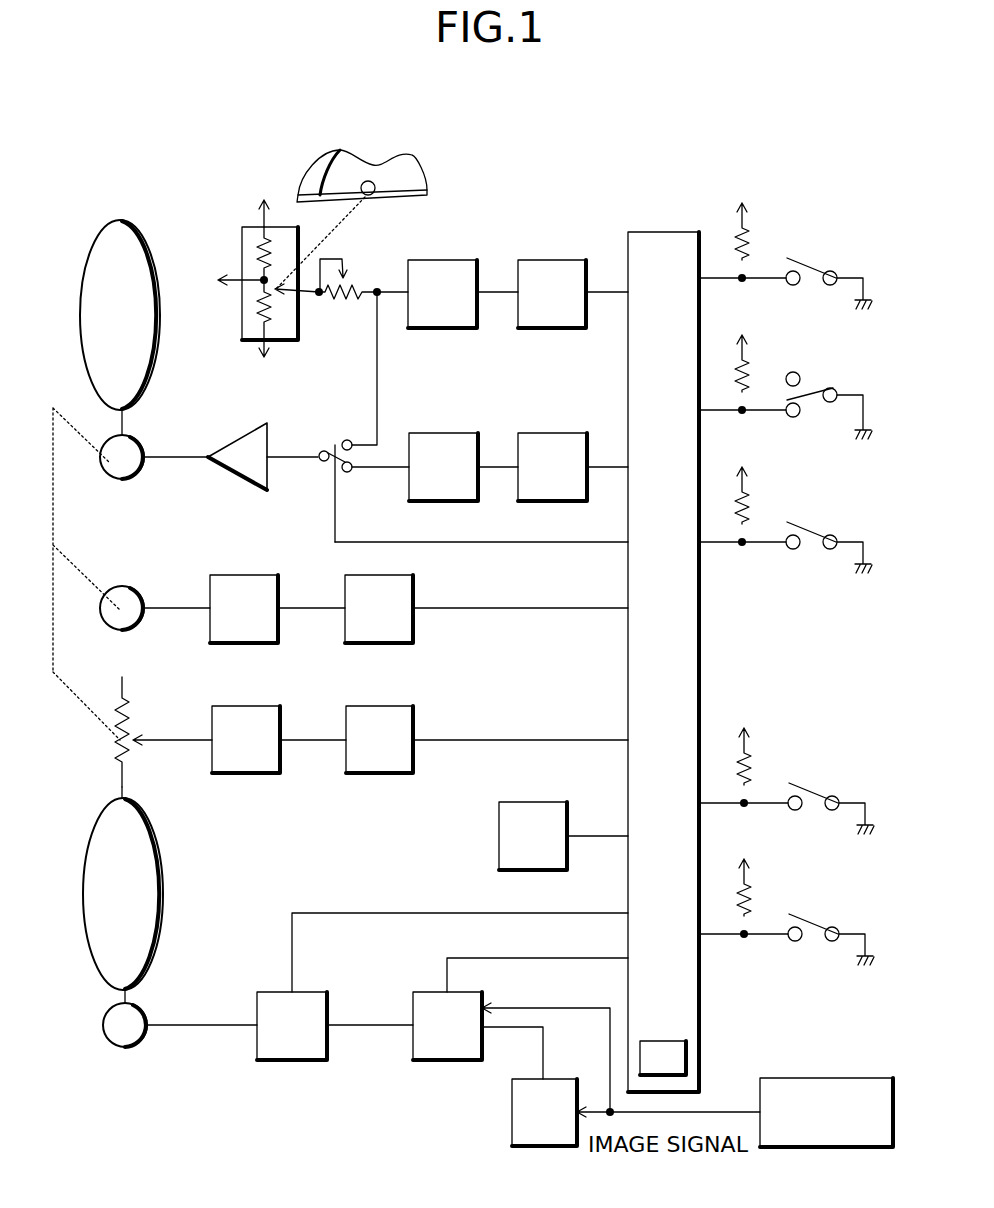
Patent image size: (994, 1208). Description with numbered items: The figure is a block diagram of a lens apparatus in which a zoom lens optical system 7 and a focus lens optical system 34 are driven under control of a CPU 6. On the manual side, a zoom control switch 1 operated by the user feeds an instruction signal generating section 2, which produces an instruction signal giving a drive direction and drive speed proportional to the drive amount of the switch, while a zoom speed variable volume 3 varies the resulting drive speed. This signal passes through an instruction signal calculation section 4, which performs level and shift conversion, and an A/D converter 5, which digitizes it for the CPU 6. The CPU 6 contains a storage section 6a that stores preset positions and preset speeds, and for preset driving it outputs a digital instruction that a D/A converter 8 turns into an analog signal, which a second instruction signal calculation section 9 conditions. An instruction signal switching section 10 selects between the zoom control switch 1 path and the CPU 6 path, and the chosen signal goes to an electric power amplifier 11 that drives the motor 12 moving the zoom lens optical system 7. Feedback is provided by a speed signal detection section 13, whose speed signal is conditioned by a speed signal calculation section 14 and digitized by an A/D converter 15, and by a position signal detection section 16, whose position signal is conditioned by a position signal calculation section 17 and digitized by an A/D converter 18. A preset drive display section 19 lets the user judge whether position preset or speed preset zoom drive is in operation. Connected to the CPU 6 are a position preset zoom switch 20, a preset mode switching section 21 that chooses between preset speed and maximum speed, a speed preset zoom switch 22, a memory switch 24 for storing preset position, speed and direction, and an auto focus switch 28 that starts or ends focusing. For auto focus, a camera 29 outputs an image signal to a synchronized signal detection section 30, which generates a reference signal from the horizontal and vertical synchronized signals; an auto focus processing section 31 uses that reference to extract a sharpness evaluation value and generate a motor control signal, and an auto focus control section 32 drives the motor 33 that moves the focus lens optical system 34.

The zoom control switch 1 is at (408, 153).
The instruction signal generating section 2 is at (242, 237).
The zoom speed variable volume 3 is at (343, 308).
The instruction signal calculation section 4 is at (442, 262).
The A/D converter 5 is at (545, 262).
The CPU 6 is at (662, 235).
The storage section 6a is at (686, 1058).
The zoom lens optical system 7 is at (123, 220).
The D/A converter 8 is at (549, 433).
The instruction signal calculation section 9 is at (435, 433).
The instruction signal switching section 10 is at (328, 463).
The electric power amplifier 11 is at (222, 470).
The motor 12 is at (135, 440).
The speed signal detection section 13 is at (126, 588).
The speed signal calculation section 14 is at (236, 640).
The A/D converter 15 is at (372, 640).
The position signal detection section 16 is at (132, 720).
The position signal calculation section 17 is at (243, 773).
The A/D converter 18 is at (376, 773).
The preset drive display section 19 is at (499, 836).
The position preset zoom switch 20 is at (812, 262).
The preset mode switching section 21 is at (814, 390).
The speed preset zoom switch 22 is at (814, 527).
The memory switch 24 is at (814, 787).
The auto focus switch 28 is at (814, 918).
The camera 29 is at (840, 1078).
The synchronized signal detection section 30 is at (512, 1125).
The auto focus processing section 31 is at (448, 1060).
The auto focus control section 32 is at (291, 1060).
The motor 33 is at (127, 1047).
The focus lens optical system 34 is at (163, 882).